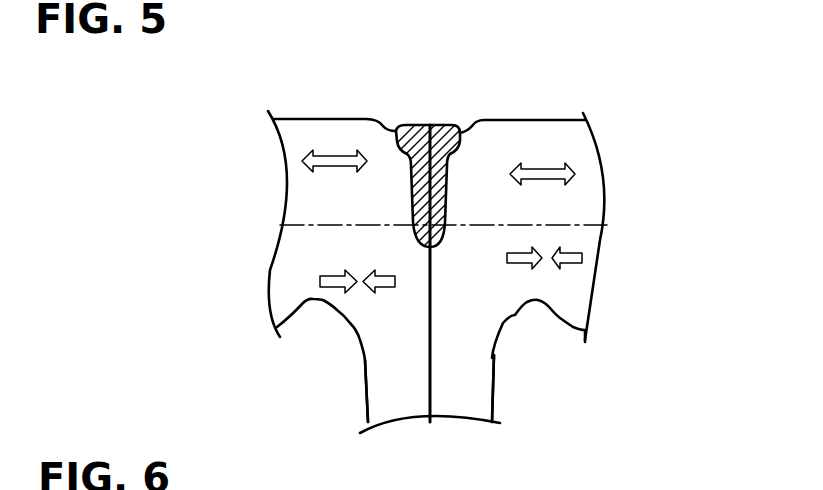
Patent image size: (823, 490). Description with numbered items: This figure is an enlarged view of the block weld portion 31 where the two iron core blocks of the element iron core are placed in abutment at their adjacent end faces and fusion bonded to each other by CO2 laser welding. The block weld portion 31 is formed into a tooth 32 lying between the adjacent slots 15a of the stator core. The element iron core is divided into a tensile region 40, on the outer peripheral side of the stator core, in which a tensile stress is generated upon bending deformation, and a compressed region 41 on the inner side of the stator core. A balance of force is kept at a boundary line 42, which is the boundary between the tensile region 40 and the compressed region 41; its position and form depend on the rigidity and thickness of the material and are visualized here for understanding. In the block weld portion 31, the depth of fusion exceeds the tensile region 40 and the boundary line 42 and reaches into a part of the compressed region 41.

The block weld portion 31 is at (414, 136).
The tooth 32 is at (453, 395).
The tensile region 40 is at (627, 117).
The compressed region 41 is at (645, 240).
The boundary line 42 is at (626, 230).
The slot 15a is at (347, 412).